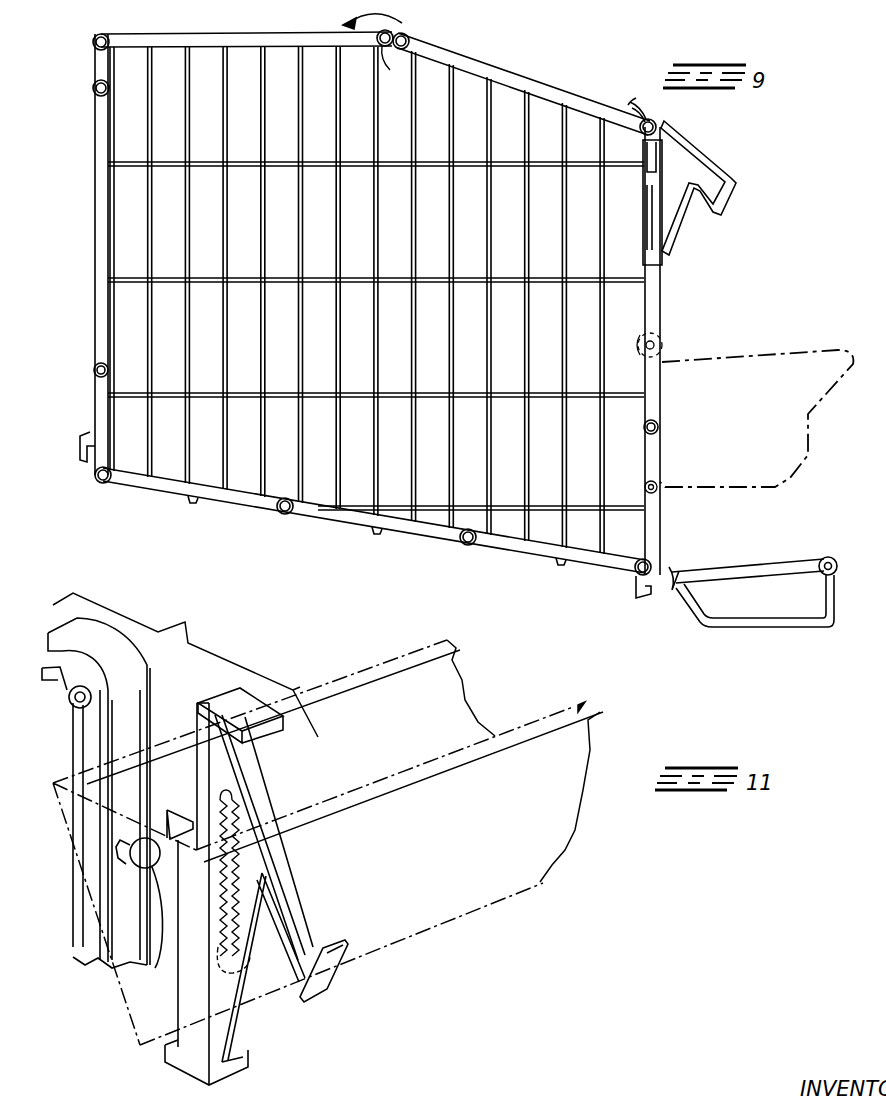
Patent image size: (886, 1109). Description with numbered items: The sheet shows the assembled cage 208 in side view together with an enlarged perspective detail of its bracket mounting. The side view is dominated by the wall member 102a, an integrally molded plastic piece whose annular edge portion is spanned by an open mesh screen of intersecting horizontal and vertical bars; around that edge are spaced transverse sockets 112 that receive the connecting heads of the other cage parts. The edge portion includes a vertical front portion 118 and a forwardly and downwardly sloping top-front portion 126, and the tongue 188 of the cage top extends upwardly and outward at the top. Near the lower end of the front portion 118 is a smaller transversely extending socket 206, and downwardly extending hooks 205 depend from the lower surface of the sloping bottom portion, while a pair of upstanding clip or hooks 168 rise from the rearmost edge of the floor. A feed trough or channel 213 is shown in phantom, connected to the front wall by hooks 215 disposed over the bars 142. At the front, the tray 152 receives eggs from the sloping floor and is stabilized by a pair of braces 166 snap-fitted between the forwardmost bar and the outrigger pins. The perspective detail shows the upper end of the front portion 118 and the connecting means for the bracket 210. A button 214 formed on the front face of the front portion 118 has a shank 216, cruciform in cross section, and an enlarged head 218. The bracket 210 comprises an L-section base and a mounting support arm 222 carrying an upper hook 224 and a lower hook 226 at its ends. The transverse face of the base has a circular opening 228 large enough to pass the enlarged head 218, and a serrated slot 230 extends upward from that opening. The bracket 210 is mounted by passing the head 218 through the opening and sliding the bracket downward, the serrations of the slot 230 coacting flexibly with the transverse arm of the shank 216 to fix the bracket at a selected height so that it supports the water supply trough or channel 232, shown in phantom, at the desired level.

In FIG. 9, the wall member 102a is at (470, 102).
In FIG. 9, the sockets 112 is at (400, 52).
In FIG. 11, the sockets 112 is at (92, 690).
In FIG. 9, the tongue 188 is at (382, 47).
In FIG. 9, the cage 208 is at (406, 19).
In FIG. 9, the vertical front portion 118 is at (656, 294).
In FIG. 11, the vertical front portion 118 is at (128, 910).
In FIG. 9, the bracket 210 is at (702, 157).
In FIG. 11, the bracket 210 is at (238, 1073).
In FIG. 9, the hooks 215 is at (641, 350).
In FIG. 9, the bars 142 is at (665, 345).
In FIG. 9, the feed trough or channel 213 is at (834, 345).
In FIG. 9, the transversely extending socket 206 is at (657, 483).
In FIG. 9, the downwardly extending hooks 205 is at (637, 598).
In FIG. 9, the braces 166 is at (789, 545).
In FIG. 9, the tray 152 is at (737, 630).
In FIG. 9, the upstanding clip or hooks 168 is at (83, 455).
In FIG. 11, the top-front portion 126 is at (110, 652).
In FIG. 11, the button 214 is at (126, 856).
In FIG. 11, the enlarged head 218 is at (116, 968).
In FIG. 11, the shank 216 is at (150, 830).
In FIG. 11, the upper hook 224 is at (273, 743).
In FIG. 11, the mounting support arm 222 is at (308, 920).
In FIG. 11, the circular opening 228 is at (232, 956).
In FIG. 11, the serrated slot 230 is at (219, 860).
In FIG. 11, the lower hook 226 is at (330, 986).
In FIG. 11, the water supply trough or channel 232 is at (433, 928).